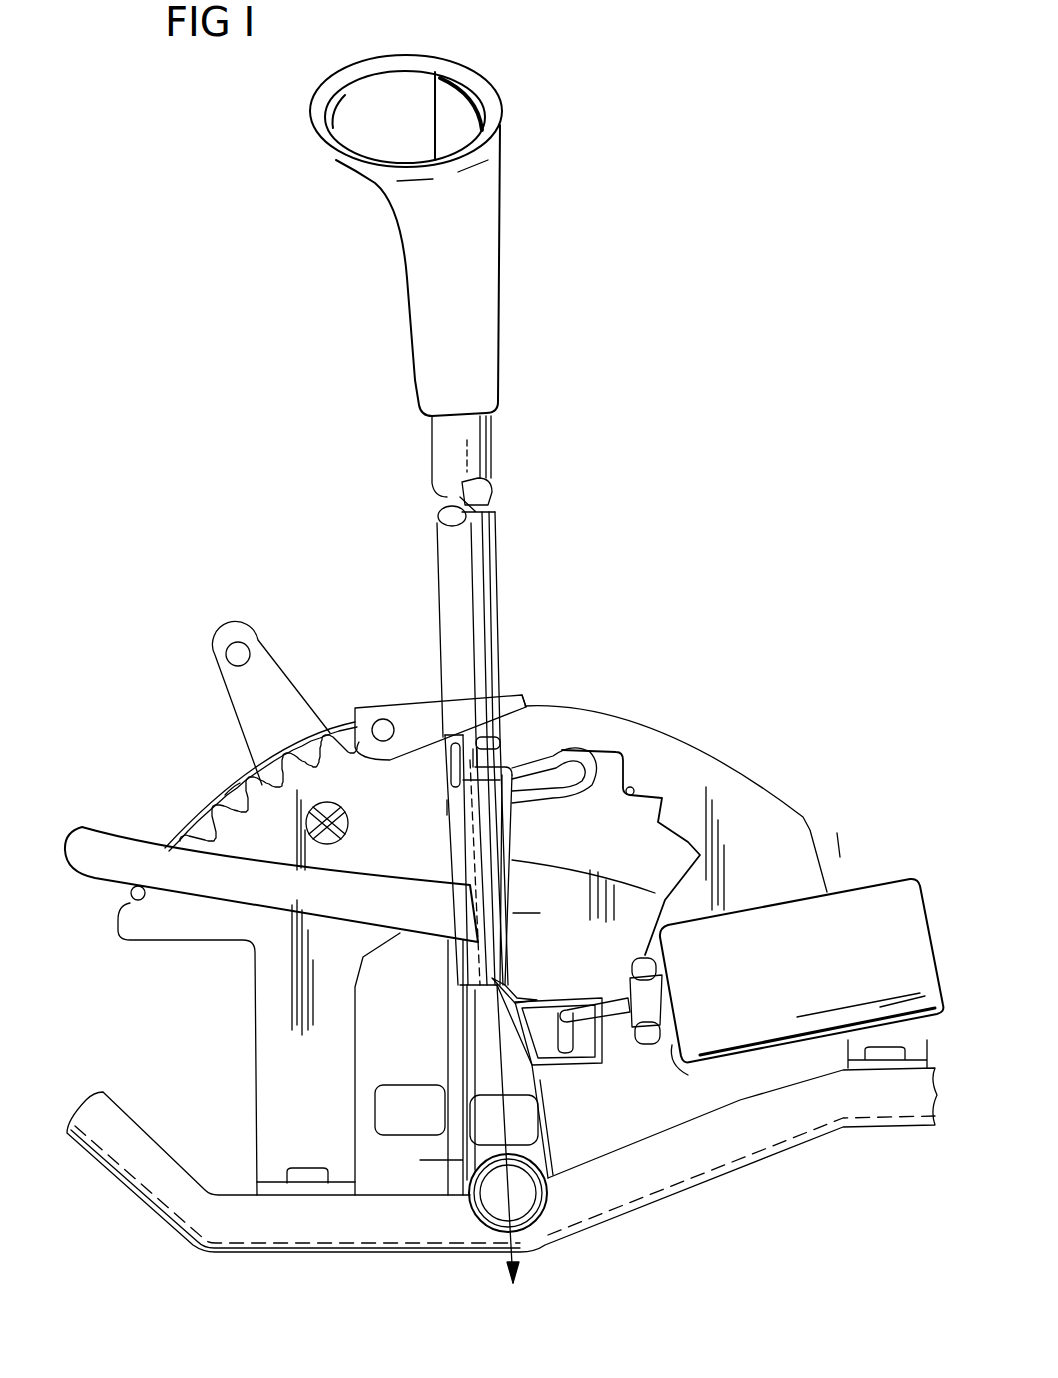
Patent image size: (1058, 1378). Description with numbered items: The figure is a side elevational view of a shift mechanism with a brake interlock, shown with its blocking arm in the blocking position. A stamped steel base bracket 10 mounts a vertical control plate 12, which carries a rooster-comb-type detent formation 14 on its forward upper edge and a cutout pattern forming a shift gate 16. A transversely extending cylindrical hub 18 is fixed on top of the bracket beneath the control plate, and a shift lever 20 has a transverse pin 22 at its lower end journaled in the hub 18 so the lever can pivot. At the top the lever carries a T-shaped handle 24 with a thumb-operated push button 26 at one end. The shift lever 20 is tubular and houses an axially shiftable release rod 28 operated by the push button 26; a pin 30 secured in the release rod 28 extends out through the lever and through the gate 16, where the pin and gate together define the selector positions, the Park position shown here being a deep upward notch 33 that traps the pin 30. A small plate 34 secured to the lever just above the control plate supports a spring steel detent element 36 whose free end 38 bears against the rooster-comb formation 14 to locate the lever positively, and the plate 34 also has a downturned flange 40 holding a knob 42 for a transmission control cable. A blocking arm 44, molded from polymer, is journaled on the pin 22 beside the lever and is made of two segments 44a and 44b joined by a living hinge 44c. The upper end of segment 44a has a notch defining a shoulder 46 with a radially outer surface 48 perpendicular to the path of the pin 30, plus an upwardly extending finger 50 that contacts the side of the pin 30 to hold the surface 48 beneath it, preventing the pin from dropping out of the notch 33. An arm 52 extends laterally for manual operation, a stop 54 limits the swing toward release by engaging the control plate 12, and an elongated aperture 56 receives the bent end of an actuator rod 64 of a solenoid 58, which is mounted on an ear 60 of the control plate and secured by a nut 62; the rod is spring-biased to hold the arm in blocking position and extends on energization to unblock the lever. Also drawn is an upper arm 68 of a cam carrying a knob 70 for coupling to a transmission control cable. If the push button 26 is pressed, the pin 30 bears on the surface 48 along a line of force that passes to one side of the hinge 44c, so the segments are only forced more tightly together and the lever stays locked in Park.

The base bracket 10 is at (680, 1165).
The control plate 12 is at (740, 790).
The rooster-comb-type detent formation 14 is at (212, 796).
The shift gate 16 is at (634, 787).
The cylindrical hub 18 is at (540, 1165).
The shift lever 20 is at (485, 550).
The pin 22 is at (487, 1200).
The T-shaped handle 24 is at (482, 82).
The push button 26 is at (330, 128).
The release rod 28 is at (450, 500).
The pin 30 is at (453, 767).
The notch 33 is at (497, 706).
The small plate 34 is at (395, 705).
The detent element 36 is at (230, 785).
The free end 38 is at (130, 898).
The downturned flange 40 is at (373, 762).
The knob 42 is at (378, 720).
The blocking arm 44 is at (511, 957).
The arm segment 44a is at (515, 812).
The arm segment 44b is at (548, 1102).
The living hinge 44c is at (505, 980).
The shoulder 46 is at (447, 813).
The radially outer surface 48 is at (500, 748).
The finger 50 is at (446, 740).
The arm 52 is at (87, 830).
The stop 54 is at (405, 1095).
The elongated aperture 56 is at (568, 1050).
The solenoid 58 is at (845, 905).
The ear 60 is at (697, 1069).
The nut 62 is at (645, 958).
The actuator rod 64 is at (612, 1005).
The upper arm 68 is at (270, 665).
The knob 70 is at (230, 648).